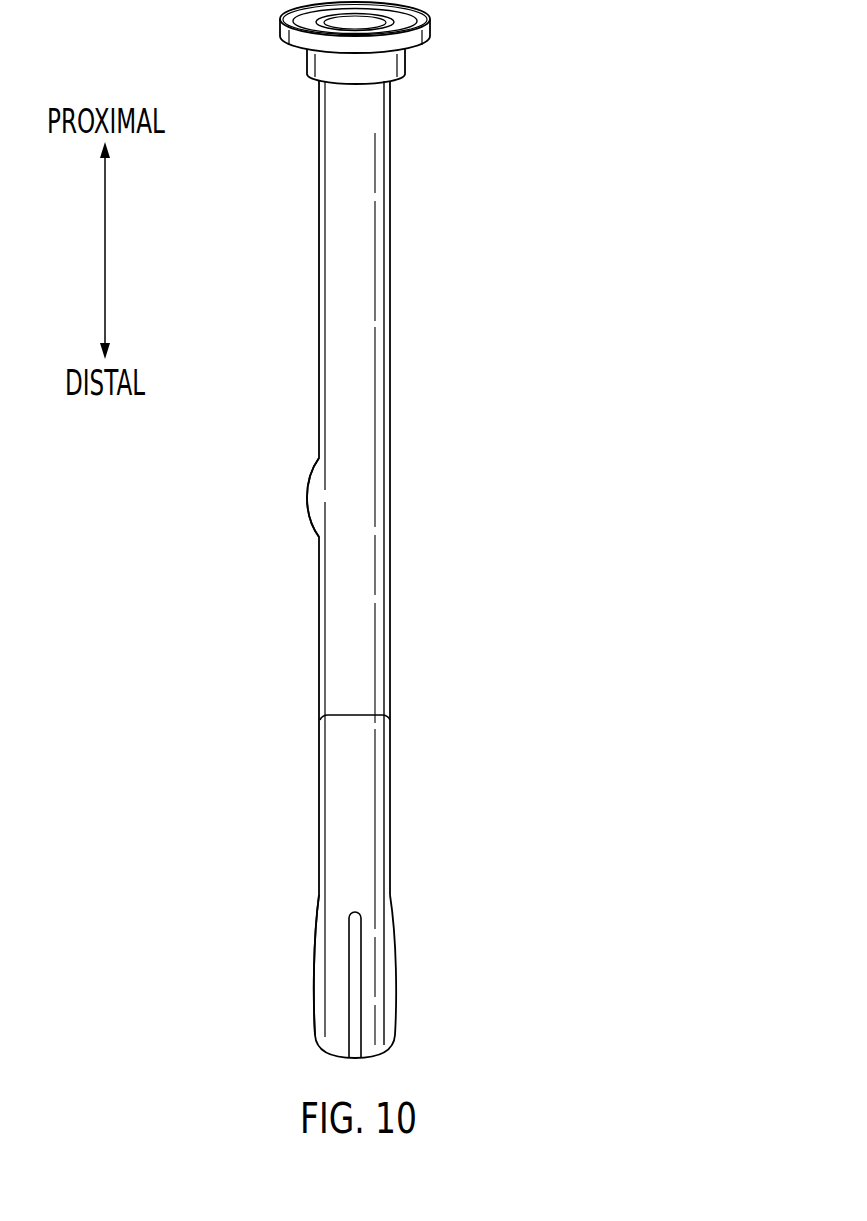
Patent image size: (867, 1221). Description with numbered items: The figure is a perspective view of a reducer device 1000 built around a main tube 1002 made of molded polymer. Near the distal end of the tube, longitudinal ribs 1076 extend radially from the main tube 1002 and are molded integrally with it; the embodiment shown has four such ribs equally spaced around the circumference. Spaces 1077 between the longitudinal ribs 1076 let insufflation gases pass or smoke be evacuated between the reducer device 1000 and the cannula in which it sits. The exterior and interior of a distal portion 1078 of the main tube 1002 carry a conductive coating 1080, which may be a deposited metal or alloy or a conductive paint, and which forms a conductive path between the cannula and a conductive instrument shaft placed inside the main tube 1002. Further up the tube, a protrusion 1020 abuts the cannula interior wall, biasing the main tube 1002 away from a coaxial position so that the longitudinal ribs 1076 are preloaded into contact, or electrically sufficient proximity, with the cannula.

The reducer device 1000 is at (454, 530).
The main tube 1002 is at (390, 393).
The protrusion 1020 is at (308, 496).
The longitudinal ribs 1076 is at (349, 1025).
The spaces 1077 is at (340, 960).
The distal portion 1078 is at (378, 886).
The conductive coating 1080 is at (330, 835).